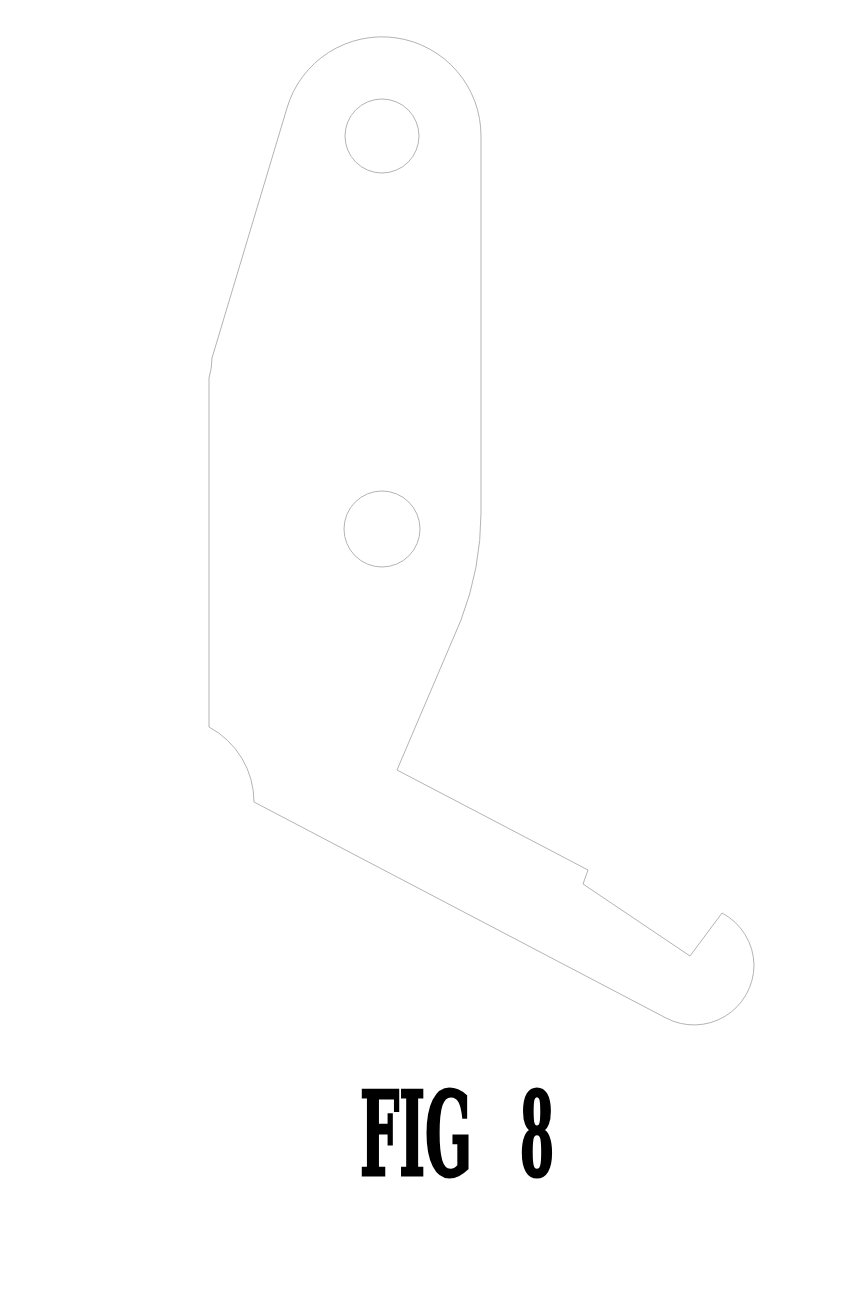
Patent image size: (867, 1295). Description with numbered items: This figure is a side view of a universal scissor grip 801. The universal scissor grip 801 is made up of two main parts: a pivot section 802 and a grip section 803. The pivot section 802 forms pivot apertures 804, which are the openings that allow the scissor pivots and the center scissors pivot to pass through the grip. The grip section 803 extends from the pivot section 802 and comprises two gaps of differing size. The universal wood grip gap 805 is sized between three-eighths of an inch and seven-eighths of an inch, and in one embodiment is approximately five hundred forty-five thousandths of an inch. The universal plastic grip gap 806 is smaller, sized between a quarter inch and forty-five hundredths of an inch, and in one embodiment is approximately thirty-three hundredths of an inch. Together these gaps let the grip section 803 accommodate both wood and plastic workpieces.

The universal scissor grip 801 is at (435, 525).
The pivot section 802 is at (558, 28).
The grip section 803 is at (793, 921).
The pivot apertures 804 is at (450, 333).
The universal wood grip gap 805 is at (605, 846).
The universal plastic grip gap 806 is at (698, 942).